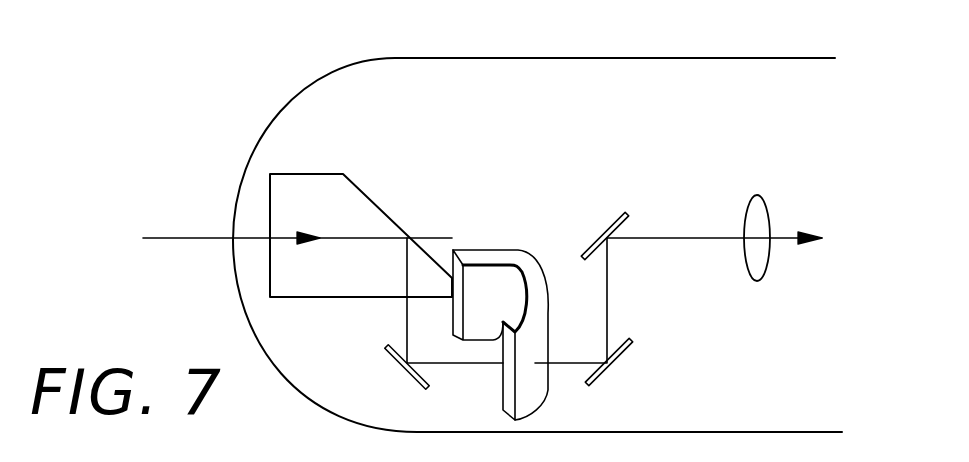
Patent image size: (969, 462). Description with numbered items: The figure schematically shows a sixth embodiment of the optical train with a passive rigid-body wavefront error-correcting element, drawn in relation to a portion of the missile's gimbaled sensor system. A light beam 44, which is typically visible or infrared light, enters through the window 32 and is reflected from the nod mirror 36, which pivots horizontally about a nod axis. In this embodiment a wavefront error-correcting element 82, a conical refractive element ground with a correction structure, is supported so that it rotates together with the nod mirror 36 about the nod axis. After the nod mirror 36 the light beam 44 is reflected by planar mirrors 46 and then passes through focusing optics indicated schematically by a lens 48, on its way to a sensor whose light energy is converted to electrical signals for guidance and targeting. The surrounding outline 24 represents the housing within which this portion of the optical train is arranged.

The housing 24 is at (572, 58).
The window 32 is at (262, 148).
The light beam 44 is at (168, 238).
The nod mirror 36 is at (318, 300).
The wavefront error-correcting element 82 is at (497, 250).
The planar mirrors 46 is at (611, 226).
The lens 48 is at (761, 262).